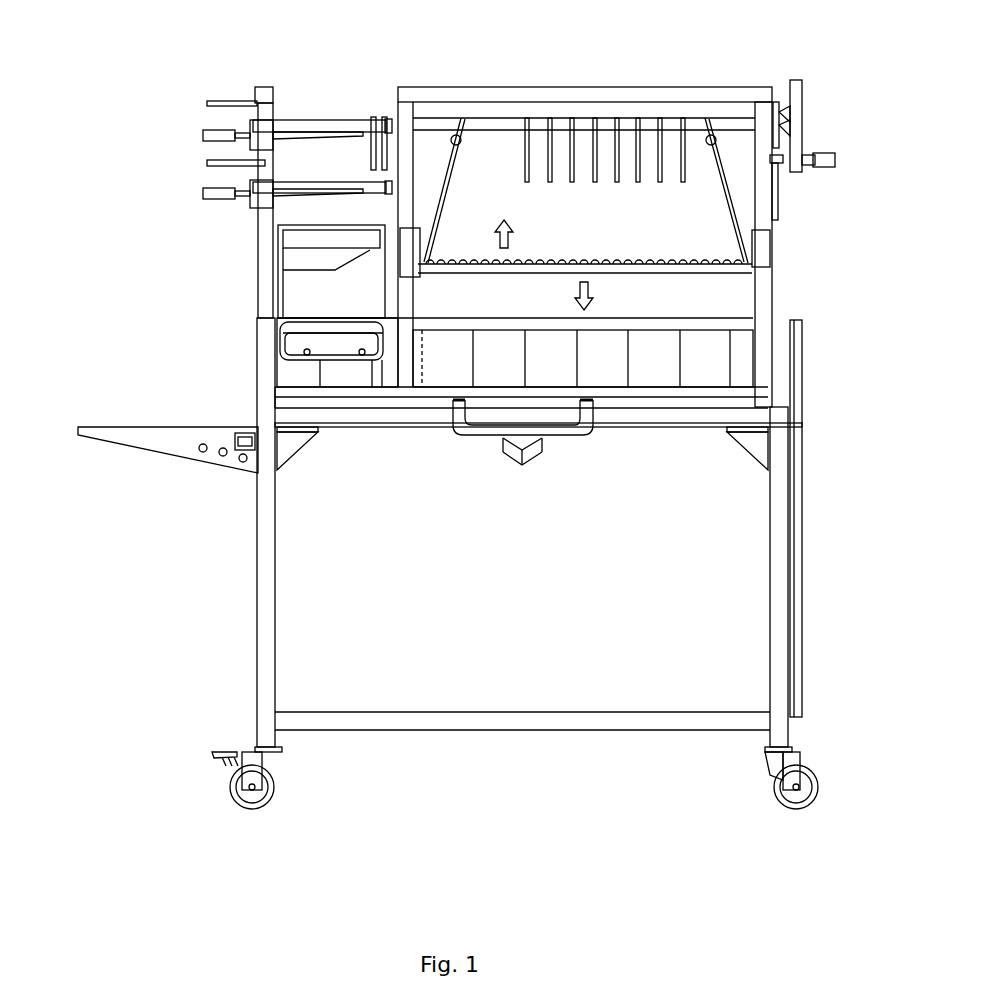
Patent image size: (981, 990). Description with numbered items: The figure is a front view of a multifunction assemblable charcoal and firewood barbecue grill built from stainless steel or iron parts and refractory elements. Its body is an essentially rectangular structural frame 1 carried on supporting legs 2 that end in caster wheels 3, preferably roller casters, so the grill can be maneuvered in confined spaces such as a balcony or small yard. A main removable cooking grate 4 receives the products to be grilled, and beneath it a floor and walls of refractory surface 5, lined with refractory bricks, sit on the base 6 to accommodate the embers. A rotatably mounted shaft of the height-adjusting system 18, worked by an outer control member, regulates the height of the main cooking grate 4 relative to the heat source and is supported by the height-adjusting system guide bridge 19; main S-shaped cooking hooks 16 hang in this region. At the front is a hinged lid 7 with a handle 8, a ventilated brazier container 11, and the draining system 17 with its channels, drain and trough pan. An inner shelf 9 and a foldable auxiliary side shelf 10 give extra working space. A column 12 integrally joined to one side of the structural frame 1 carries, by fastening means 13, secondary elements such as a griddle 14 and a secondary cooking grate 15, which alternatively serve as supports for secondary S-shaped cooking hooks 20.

The structural frame 1 is at (207, 542).
The supporting legs 2 is at (258, 622).
The caster wheels 3 is at (240, 788).
The main cooking grate 4 is at (673, 270).
The floor and walls of refractory surface 5 is at (667, 357).
The base 6 is at (737, 417).
The lid 7 is at (740, 392).
The handle 8 is at (467, 427).
The inner shelf 9 is at (620, 717).
The auxiliary side shelf 10 is at (127, 427).
The brazier container 11 is at (298, 298).
The column 12 is at (258, 257).
The fastening means 13 is at (257, 132).
The griddle 14 is at (313, 182).
The secondary cooking grate 15 is at (312, 118).
The main S-shaped cooking hooks 16 is at (617, 172).
The draining system 17 is at (537, 452).
The height-adjusting system 18 is at (797, 120).
The height-adjusting system guide bridge 19 is at (412, 203).
The secondary S-shaped cooking hooks 20 is at (375, 118).